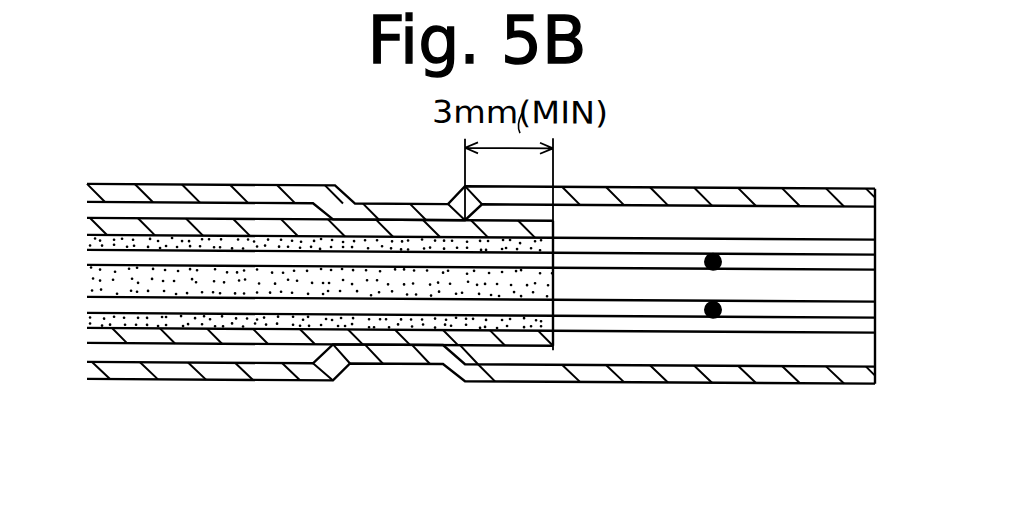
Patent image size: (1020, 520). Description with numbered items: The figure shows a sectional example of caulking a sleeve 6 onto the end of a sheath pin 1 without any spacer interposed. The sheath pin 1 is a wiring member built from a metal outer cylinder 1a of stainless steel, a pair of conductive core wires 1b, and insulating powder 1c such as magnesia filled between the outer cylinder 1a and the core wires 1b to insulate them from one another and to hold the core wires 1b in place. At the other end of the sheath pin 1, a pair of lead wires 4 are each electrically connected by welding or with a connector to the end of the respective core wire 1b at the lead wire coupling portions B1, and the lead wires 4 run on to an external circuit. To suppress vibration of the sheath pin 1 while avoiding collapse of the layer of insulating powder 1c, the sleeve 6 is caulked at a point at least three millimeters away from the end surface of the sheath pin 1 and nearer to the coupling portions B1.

The sheath pin 1 is at (347, 341).
The metal outer cylinder 1a is at (493, 335).
The conductive core wires 1b is at (665, 308).
The insulating powder 1c is at (555, 287).
The lead wires 4 is at (835, 307).
The sleeve 6 is at (816, 197).
The lead wire coupling portions B1 is at (713, 314).